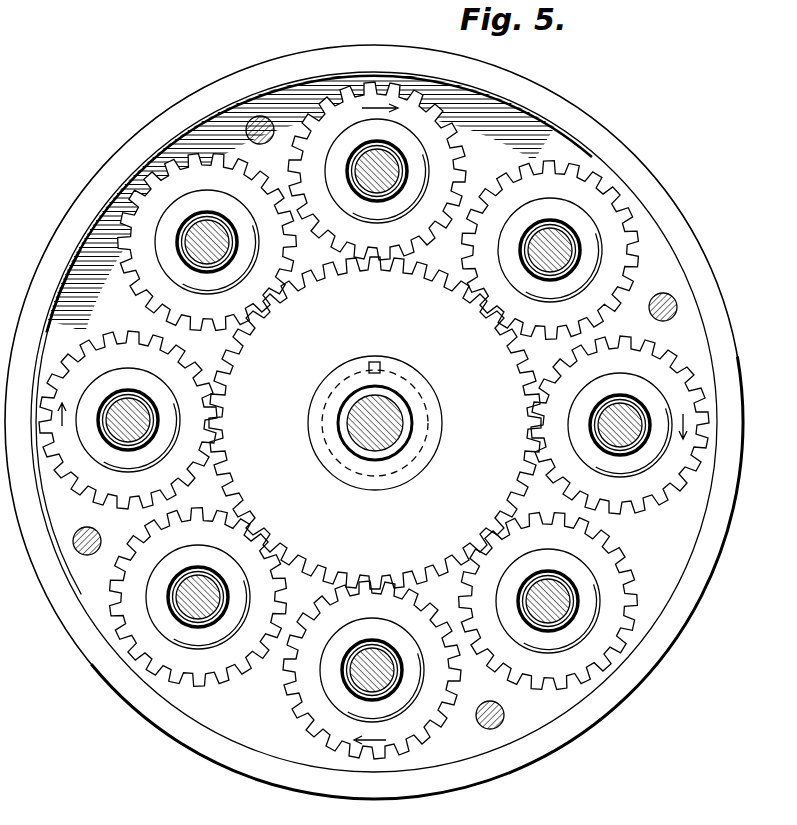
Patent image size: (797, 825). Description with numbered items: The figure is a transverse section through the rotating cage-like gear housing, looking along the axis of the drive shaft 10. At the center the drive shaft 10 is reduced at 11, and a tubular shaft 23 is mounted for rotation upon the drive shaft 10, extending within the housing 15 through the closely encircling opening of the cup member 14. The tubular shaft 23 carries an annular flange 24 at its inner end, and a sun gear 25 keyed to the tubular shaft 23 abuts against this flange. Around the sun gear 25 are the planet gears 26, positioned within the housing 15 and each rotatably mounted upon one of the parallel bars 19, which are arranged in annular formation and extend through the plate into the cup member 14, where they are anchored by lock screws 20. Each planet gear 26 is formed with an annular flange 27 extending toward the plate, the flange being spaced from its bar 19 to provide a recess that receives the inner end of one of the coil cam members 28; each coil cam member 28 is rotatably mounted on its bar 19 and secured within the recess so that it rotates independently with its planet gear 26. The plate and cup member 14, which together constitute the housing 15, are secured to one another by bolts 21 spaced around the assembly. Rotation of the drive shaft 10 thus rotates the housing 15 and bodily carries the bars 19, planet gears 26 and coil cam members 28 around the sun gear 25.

The drive shaft 10 is at (350, 447).
The reduced shaft portion 11 is at (385, 447).
The cup member 14 is at (216, 718).
The housing 15 is at (141, 128).
The parallel bars 19 is at (399, 171).
The lock screws 20 is at (230, 820).
The bolts 21 is at (258, 116).
The tubular shaft 23 is at (411, 470).
The annular flange 24 is at (430, 386).
The sun gear 25 is at (380, 328).
The planet gears 26 is at (551, 162).
The annular flange 27 is at (244, 280).
The coil cam members 28 is at (357, 160).